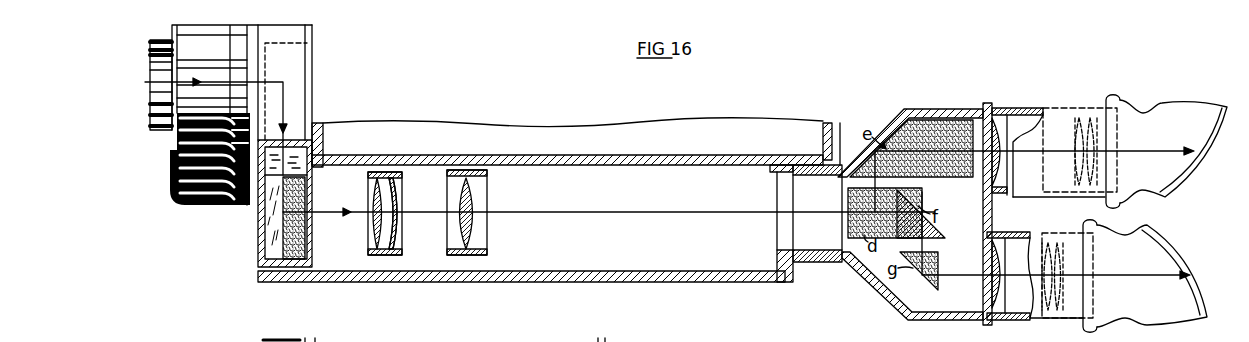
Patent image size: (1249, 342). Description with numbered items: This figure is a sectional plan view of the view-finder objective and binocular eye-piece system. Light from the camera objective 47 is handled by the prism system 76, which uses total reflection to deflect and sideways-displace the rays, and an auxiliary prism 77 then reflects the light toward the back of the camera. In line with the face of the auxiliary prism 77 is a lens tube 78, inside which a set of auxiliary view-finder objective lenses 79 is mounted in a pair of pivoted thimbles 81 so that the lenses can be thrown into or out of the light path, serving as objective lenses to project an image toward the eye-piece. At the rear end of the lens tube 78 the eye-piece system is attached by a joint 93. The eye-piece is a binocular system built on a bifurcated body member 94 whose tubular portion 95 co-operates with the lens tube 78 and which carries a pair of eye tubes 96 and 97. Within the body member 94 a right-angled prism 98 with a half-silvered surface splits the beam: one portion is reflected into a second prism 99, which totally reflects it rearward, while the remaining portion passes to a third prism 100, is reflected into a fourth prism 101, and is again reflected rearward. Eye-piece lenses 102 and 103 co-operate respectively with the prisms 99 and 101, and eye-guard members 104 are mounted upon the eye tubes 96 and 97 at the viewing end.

The objective 47 is at (166, 145).
The prism system 76 is at (305, 71).
The auxiliary prism 77 is at (267, 239).
The lens tube 78 is at (492, 279).
The auxiliary view-finder objective lenses 79 is at (447, 239).
The thimbles 81 is at (403, 173).
The joint 93 is at (816, 262).
The bifurcated body member 94 is at (900, 114).
The tubular portion 95 is at (828, 175).
The eye tube 96 is at (1091, 110).
The eye tube 97 is at (1061, 320).
The right-angled prism 98 is at (848, 201).
The second prism 99 is at (944, 118).
The third prism 100 is at (908, 204).
The fourth prism 101 is at (927, 282).
The eye-piece lens 102 is at (1022, 108).
The eye-piece lens 103 is at (1000, 321).
The eye-guard members 104 is at (1173, 110).